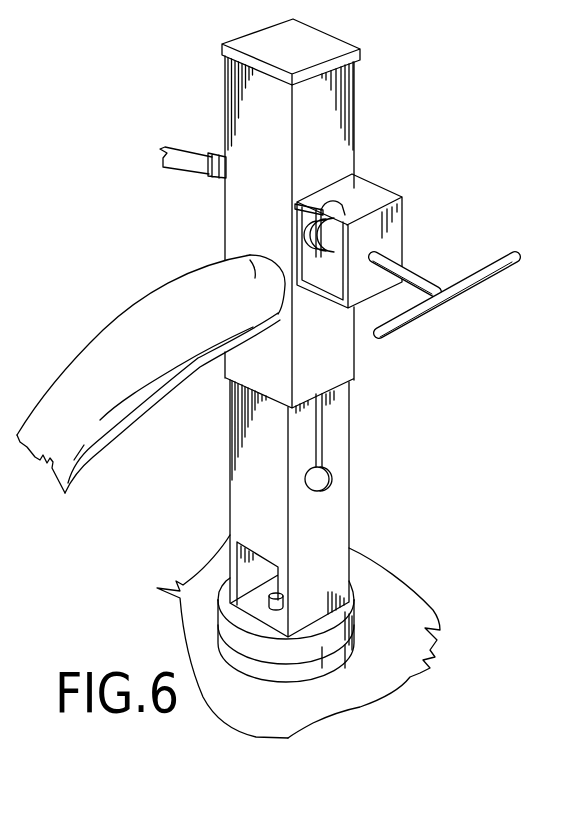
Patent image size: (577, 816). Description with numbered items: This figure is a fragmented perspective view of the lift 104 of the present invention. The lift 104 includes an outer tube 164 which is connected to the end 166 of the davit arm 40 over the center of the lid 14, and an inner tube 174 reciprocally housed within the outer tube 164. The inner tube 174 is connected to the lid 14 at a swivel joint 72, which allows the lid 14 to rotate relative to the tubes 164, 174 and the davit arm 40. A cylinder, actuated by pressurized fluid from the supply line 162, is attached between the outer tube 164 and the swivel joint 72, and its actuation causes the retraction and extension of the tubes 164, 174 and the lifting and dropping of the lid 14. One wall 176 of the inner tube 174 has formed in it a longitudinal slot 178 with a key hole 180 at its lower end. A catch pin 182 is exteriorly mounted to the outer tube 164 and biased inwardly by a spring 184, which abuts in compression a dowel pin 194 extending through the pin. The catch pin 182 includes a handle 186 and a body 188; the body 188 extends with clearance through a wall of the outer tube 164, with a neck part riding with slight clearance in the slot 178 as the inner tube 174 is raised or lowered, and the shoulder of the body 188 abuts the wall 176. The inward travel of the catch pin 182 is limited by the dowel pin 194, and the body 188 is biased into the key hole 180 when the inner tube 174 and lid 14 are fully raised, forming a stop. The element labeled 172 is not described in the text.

The lift 104 is at (372, 106).
The outer tube 164 is at (260, 120).
The supply line 162 is at (180, 147).
The end of davit arm 166 is at (250, 258).
The davit arm 40 is at (143, 328).
The dowel pin 194 is at (324, 205).
The spring 184 is at (345, 200).
The catch pin 182 is at (461, 292).
The handle 186 is at (505, 268).
The body 188 is at (430, 273).
The wall of inner tube 176 is at (337, 460).
The inner tube 174 is at (328, 556).
The longitudinal slot 178 is at (317, 430).
The key hole 180 is at (313, 483).
The lid 14 is at (404, 600).
The upper base disc 172 is at (257, 620).
The swivel joint 72 is at (270, 668).